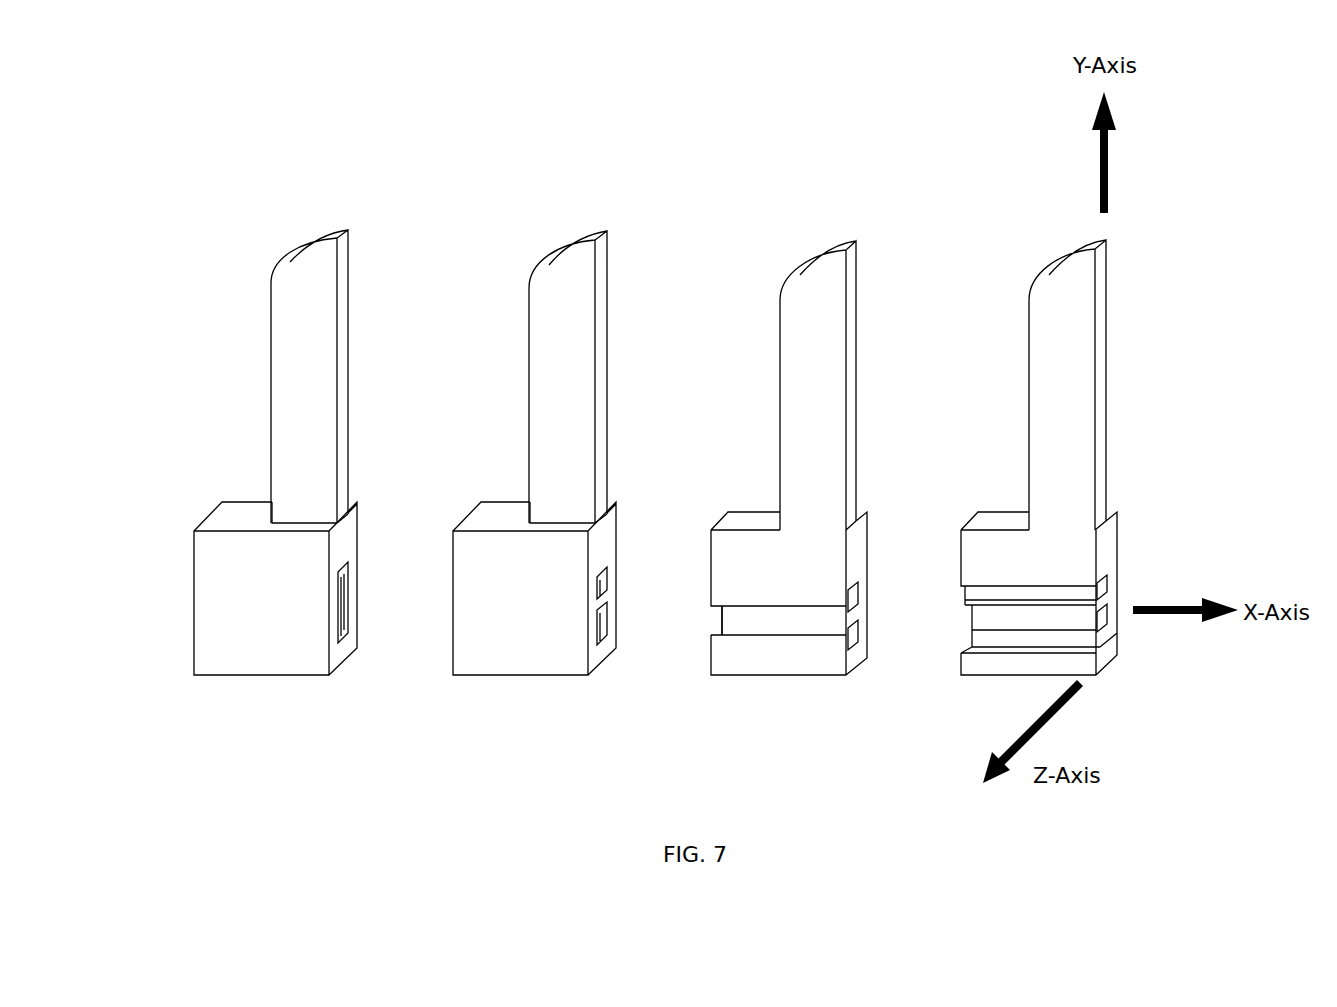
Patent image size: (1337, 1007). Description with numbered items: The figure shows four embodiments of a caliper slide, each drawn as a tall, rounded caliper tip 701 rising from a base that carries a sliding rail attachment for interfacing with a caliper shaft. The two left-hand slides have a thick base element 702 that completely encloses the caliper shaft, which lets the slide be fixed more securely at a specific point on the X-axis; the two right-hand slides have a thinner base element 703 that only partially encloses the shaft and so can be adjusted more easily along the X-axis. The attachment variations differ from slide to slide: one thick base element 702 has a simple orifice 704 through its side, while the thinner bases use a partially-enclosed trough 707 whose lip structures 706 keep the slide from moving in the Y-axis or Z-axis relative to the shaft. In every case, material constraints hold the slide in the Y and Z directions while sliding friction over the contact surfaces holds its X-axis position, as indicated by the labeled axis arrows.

The caliper tip 701 is at (355, 276).
The thick base element 702 is at (537, 677).
The thinner base element 703 is at (1020, 678).
The simple orifice 704 is at (347, 610).
The lip structures 706 is at (847, 637).
The partially-enclosed trough 707 is at (768, 613).